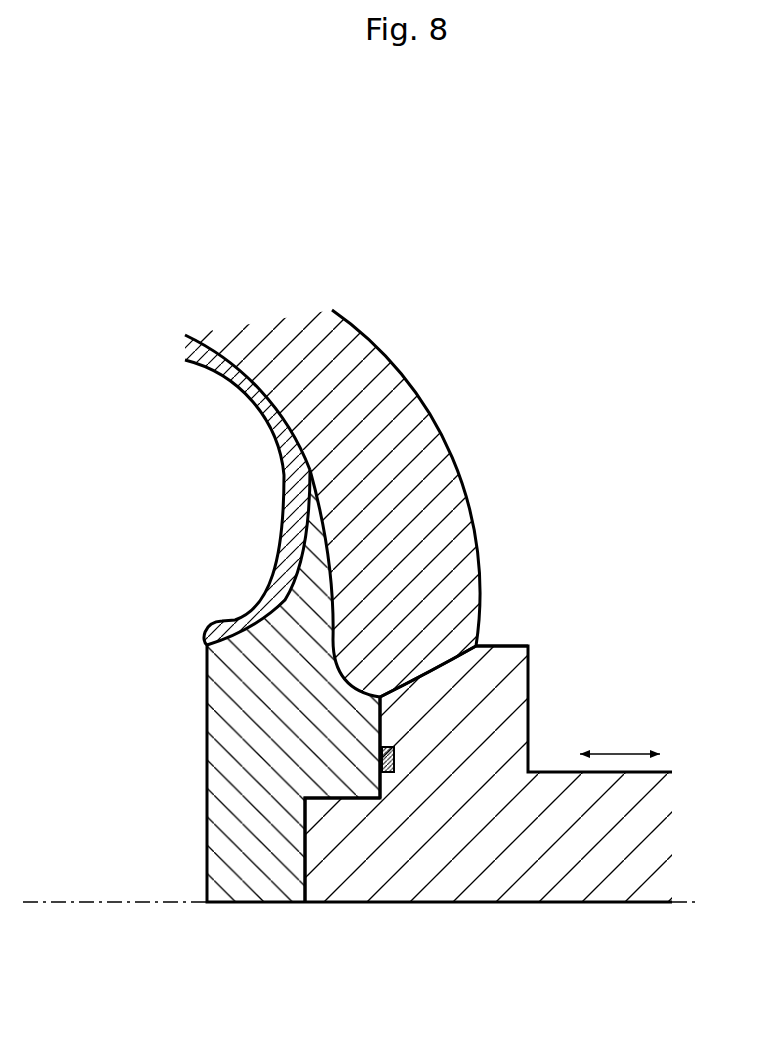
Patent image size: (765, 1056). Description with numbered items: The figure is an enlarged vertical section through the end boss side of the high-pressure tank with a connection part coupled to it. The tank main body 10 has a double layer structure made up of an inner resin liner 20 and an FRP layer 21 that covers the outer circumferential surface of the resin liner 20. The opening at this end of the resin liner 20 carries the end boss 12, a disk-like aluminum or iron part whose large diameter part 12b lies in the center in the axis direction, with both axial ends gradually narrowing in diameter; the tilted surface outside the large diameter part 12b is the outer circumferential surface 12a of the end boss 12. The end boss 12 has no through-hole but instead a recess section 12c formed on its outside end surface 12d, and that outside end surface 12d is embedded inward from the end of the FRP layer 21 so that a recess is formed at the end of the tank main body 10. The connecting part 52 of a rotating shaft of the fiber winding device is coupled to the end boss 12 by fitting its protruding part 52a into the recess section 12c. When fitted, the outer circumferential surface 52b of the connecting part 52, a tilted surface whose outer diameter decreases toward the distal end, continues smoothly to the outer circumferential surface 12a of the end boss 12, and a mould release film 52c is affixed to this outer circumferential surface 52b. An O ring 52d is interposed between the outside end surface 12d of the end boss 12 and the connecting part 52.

The tank main body 10 is at (337, 483).
The end boss 12 is at (397, 729).
The outer circumferential surface of the end boss 12a is at (333, 607).
The large diameter part 12b is at (315, 538).
The recess section 12c is at (306, 878).
The outside end surface of the end boss 12d is at (382, 723).
The resin liner 20 is at (273, 429).
The FRP layer 21 is at (417, 383).
The connecting part 52 is at (488, 786).
The protruding part 52a is at (368, 873).
The outer circumferential surface of the connecting part 52b is at (467, 647).
The mould release film 52c is at (437, 663).
The O ring 52d is at (395, 768).